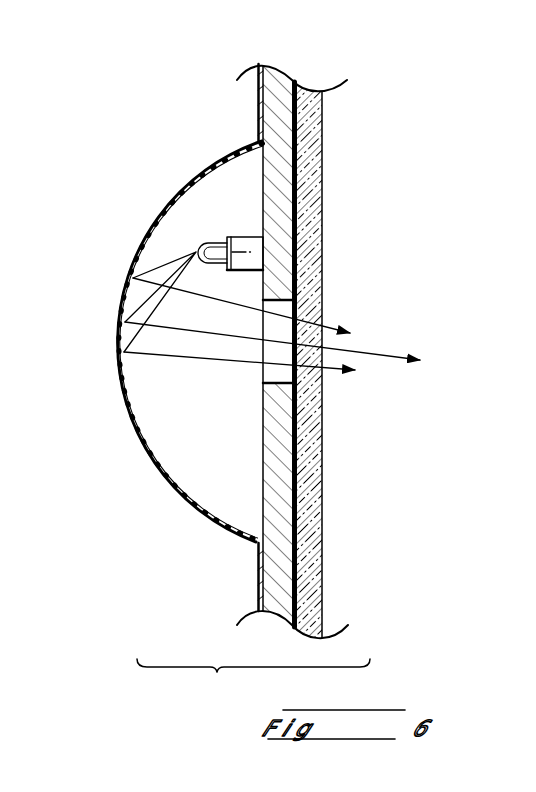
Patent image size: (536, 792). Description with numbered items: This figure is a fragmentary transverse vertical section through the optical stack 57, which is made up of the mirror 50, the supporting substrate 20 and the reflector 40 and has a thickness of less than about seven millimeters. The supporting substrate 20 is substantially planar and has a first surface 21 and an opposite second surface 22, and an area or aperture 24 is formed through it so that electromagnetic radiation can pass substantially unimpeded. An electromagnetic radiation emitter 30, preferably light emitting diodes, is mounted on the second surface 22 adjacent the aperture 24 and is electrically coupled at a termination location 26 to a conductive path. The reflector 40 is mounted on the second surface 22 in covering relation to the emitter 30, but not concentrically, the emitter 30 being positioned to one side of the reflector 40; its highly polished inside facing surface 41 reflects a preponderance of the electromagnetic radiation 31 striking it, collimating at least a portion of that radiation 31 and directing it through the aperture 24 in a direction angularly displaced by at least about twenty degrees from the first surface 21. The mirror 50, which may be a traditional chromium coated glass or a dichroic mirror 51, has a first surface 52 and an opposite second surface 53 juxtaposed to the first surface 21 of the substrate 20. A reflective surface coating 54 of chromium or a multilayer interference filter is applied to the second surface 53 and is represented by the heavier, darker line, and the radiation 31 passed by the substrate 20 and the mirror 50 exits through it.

The supporting substrate 20 is at (318, 346).
The first surface 21 is at (308, 144).
The second surface 22 is at (181, 337).
The area 24 is at (266, 371).
The termination location 26 is at (263, 212).
The electromagnetic radiation emitter 30 is at (248, 237).
The electromagnetic radiation 31 is at (180, 335).
The reflector 40 is at (165, 337).
The inside facing surface 41 is at (150, 453).
The mirror 50 is at (363, 543).
The dichroic mirror 51 is at (308, 543).
The first surface 52 is at (323, 228).
The second surface 53 is at (298, 430).
The reflective surface coating 54 is at (306, 92).
The optical stack 57 is at (253, 682).